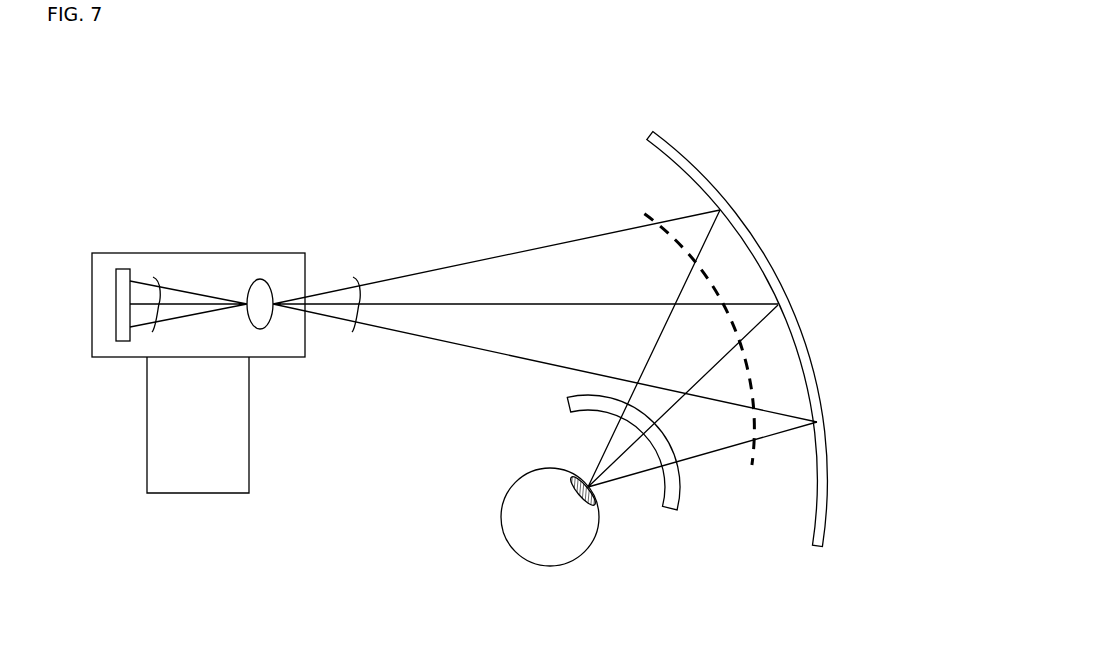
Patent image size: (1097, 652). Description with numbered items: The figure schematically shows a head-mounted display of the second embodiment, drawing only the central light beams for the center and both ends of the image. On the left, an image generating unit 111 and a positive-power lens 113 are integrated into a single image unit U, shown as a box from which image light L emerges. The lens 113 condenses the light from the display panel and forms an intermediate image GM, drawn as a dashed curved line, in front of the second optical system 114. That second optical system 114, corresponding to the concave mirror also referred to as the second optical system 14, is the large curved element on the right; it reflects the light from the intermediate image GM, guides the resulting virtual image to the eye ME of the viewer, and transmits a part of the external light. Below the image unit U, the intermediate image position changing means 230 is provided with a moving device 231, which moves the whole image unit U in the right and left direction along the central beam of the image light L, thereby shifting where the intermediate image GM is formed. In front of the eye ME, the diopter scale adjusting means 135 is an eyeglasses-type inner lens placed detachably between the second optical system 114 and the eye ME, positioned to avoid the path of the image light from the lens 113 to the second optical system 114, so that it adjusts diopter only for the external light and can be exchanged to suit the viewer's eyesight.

The second optical system 14 is at (721, 196).
The second optical system 114 is at (826, 489).
The lens 113 is at (263, 281).
The image generating unit 111 is at (122, 342).
The intermediate image position changing means 230 is at (222, 379).
The moving device 231 is at (207, 477).
The diopter scale adjusting means 135 is at (676, 497).
The image unit U is at (125, 238).
The image light L is at (158, 277).
The intermediate image GM is at (648, 212).
The eye ME is at (563, 545).